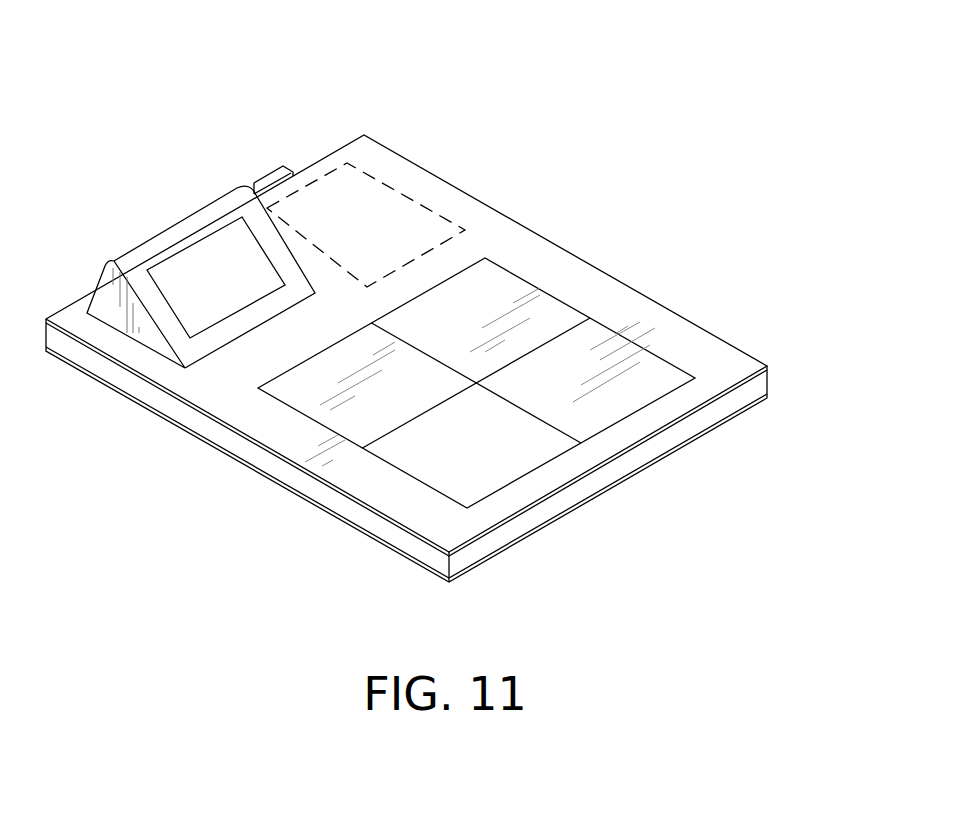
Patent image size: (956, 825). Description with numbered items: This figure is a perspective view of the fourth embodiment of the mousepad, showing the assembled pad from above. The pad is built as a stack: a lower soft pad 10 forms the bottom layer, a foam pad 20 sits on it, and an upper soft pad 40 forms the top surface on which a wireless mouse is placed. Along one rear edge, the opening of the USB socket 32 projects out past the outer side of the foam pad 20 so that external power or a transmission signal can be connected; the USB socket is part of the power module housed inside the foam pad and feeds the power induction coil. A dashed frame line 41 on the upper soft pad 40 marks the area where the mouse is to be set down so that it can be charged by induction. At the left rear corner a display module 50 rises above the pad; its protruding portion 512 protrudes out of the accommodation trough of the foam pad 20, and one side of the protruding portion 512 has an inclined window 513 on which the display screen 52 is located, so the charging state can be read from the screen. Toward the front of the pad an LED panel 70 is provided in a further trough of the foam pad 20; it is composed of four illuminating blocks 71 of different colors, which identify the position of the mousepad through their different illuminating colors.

The lower soft pad 10 is at (620, 490).
The foam pad 20 is at (772, 374).
The USB socket 32 is at (268, 172).
The upper soft pad 40 is at (509, 193).
The frame line 41 is at (423, 206).
The display module 50 is at (213, 175).
The display screen 52 is at (197, 300).
The LED panel 70 is at (593, 290).
The illuminating blocks 71 is at (640, 380).
The protruding portion 512 is at (143, 252).
The window 513 is at (188, 243).